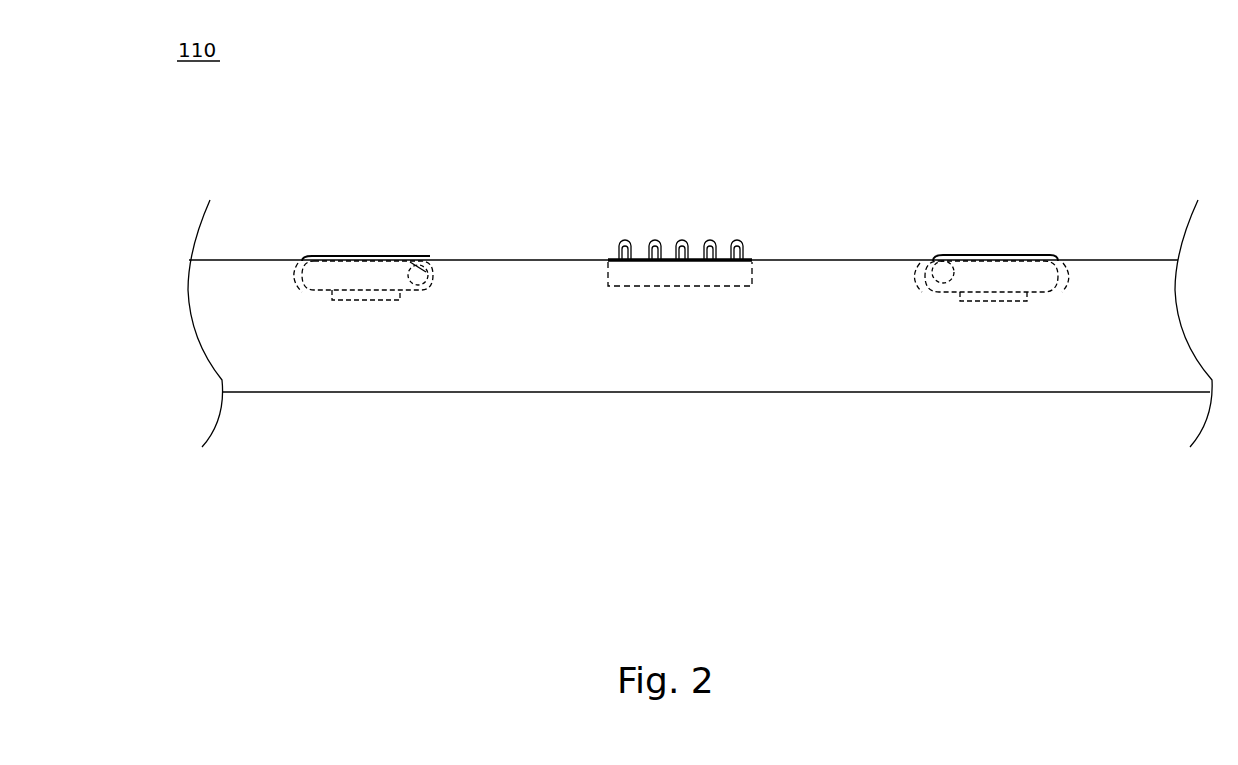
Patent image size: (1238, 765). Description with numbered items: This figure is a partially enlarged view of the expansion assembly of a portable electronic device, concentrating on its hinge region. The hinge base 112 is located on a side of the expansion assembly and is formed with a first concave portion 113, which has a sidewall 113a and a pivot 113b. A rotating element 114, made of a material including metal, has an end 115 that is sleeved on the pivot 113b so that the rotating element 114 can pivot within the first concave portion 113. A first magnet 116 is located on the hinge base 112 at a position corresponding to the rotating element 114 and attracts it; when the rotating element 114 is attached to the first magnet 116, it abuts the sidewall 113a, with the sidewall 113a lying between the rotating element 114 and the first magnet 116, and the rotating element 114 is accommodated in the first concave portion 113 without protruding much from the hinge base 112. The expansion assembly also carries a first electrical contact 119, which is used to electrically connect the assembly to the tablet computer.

The hinge base 112 is at (453, 380).
The first concave portion 113 is at (420, 308).
The sidewall 113a is at (365, 291).
The pivot 113b is at (423, 262).
The rotating element 114 is at (342, 272).
The end of the rotating element 115 is at (423, 258).
The first magnet 116 is at (367, 361).
The first electrical contact 119 is at (690, 273).